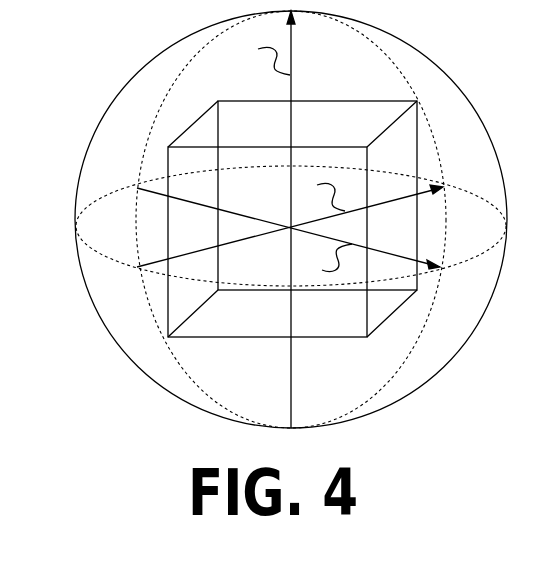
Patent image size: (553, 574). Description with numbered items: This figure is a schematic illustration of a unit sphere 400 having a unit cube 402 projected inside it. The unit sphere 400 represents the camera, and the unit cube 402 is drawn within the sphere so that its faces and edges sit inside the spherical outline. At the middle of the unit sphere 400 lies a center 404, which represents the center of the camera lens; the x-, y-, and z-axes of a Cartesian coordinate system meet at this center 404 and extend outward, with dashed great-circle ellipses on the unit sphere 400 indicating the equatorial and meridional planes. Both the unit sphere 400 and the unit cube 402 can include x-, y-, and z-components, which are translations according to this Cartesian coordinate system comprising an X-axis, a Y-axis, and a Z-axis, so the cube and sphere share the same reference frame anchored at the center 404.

The unit sphere 400 is at (135, 77).
The unit cube 402 is at (177, 141).
The center 404 is at (287, 226).